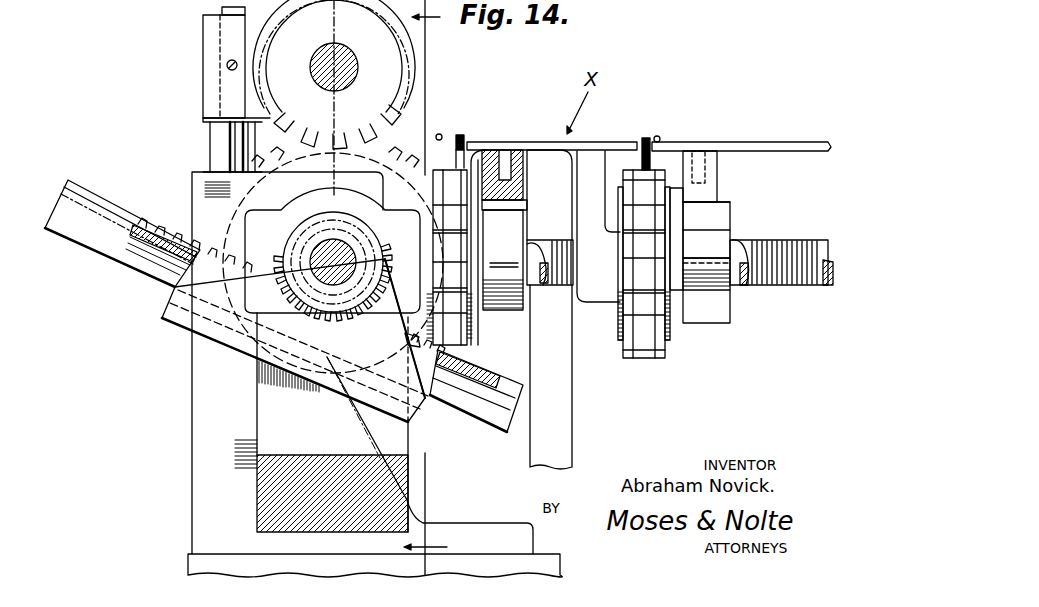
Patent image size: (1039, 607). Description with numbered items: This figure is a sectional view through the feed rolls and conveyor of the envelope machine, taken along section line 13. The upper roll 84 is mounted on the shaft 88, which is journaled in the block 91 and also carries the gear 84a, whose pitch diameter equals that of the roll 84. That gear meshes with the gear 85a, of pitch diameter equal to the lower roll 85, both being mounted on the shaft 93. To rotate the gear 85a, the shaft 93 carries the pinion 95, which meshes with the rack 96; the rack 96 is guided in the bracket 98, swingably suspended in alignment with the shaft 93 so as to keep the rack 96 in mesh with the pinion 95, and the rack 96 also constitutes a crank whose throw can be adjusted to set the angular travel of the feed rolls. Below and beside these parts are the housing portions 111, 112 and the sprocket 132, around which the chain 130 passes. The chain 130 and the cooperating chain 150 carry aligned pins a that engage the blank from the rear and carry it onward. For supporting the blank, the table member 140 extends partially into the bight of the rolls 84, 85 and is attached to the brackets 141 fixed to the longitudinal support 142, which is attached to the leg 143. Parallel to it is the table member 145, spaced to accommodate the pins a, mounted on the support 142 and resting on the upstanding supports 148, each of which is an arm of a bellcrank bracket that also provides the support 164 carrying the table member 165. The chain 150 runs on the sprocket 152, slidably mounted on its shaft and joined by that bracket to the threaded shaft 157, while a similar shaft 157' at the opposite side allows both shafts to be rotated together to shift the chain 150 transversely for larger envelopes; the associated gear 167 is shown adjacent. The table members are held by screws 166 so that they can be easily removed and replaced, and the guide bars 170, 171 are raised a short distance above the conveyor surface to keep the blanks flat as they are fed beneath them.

The section line 13- 13 is at (425, 288).
The block 91 is at (202, 34).
The shaft 88 is at (318, 58).
The roll 84 is at (410, 63).
The gear 84a is at (277, 127).
The gear 85a is at (277, 150).
The bearing bracket 111 is at (217, 148).
The housing pedestal 112 is at (196, 416).
The shaft 93 is at (322, 244).
The pinion 95 is at (304, 288).
The roll 85 is at (217, 230).
The bracket 98 is at (176, 314).
The sprocket 132 is at (386, 331).
The rack 96 is at (482, 382).
The chain 130 is at (455, 337).
The table member 165 is at (745, 141).
The guide bar or wire 170 is at (441, 133).
The bracket 141 is at (466, 148).
The table member 140 is at (459, 133).
The pin a is at (441, 133).
The longitudinal support 142 is at (505, 140).
The table member 145 is at (486, 148).
The shaft 157' is at (674, 231).
The leg 143 is at (560, 371).
The upstanding support 148 is at (588, 292).
The chain 150 is at (643, 345).
The sprocket 152 is at (669, 330).
The guide bar or wire 171 is at (657, 134).
The support 164 is at (719, 180).
The screw 166 is at (506, 140).
The gear 167 is at (730, 302).
The threaded shaft 157 is at (781, 287).